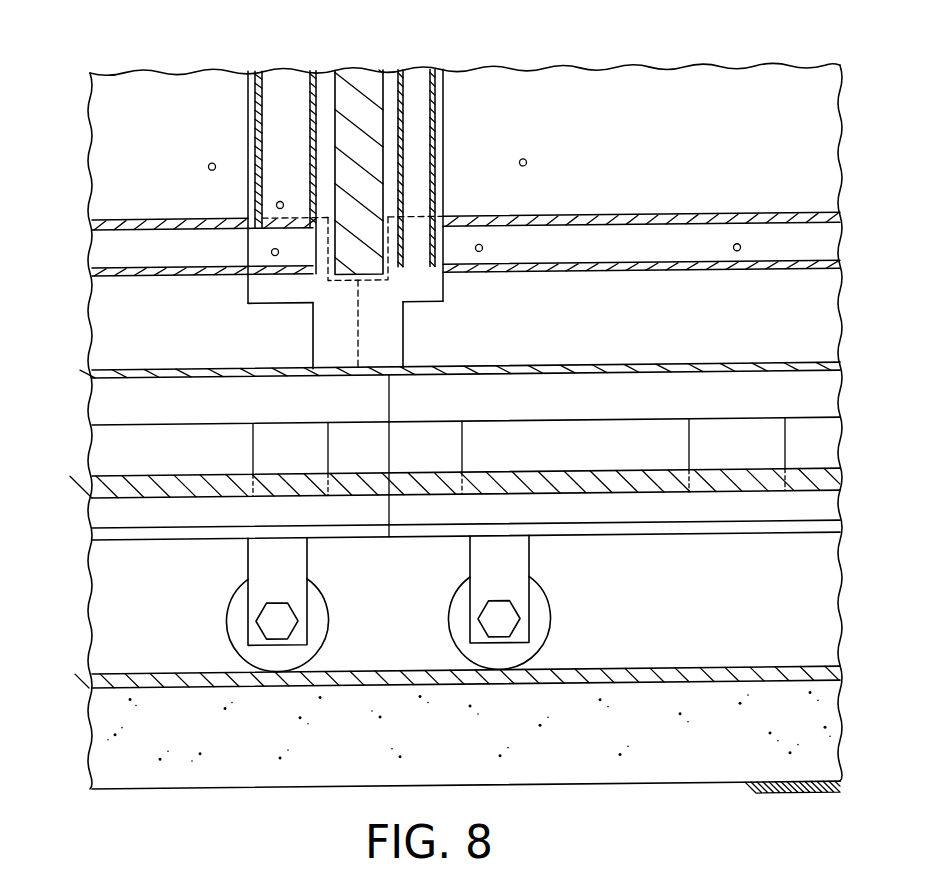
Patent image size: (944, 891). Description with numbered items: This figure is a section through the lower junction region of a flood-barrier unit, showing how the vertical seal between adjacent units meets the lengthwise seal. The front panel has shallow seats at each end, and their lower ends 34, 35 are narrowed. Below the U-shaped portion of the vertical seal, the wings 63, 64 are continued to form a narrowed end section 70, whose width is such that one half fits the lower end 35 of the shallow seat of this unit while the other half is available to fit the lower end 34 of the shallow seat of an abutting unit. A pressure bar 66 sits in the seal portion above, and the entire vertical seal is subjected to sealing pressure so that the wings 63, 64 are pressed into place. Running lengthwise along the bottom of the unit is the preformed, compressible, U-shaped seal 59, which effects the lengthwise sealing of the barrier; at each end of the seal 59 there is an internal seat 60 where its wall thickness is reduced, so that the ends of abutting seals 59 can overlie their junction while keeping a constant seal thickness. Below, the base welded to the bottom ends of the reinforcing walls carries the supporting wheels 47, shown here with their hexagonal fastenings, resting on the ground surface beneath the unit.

The lower end of the seat 34 is at (390, 342).
The lower end of the seat 35 is at (325, 337).
The supporting wheels 47 is at (315, 617).
The U-shaped seal 59 is at (108, 327).
The internal seat 60 is at (120, 225).
The wing 63 is at (252, 135).
The wing 64 is at (437, 120).
The pressure bar 66 is at (368, 88).
The narrowed end section 70 is at (390, 313).